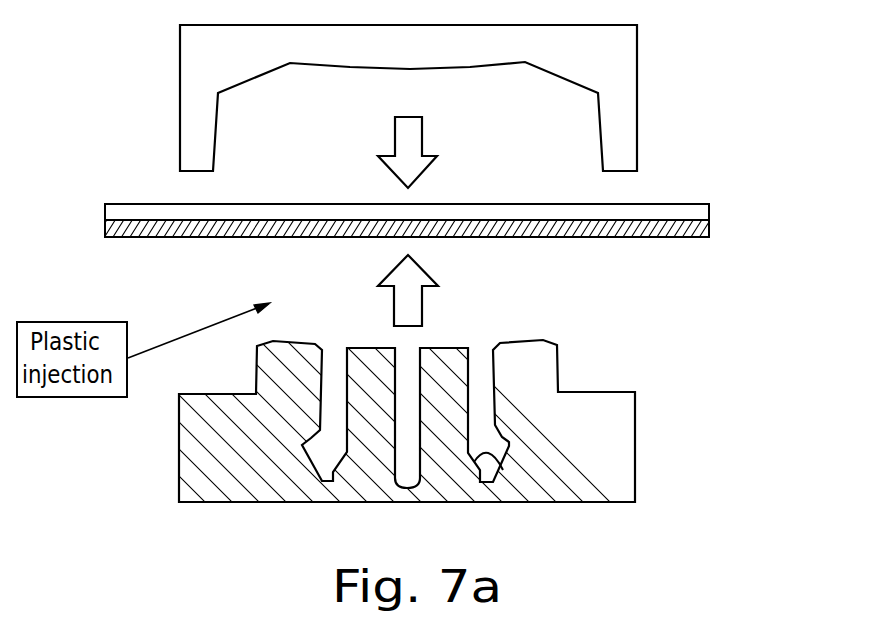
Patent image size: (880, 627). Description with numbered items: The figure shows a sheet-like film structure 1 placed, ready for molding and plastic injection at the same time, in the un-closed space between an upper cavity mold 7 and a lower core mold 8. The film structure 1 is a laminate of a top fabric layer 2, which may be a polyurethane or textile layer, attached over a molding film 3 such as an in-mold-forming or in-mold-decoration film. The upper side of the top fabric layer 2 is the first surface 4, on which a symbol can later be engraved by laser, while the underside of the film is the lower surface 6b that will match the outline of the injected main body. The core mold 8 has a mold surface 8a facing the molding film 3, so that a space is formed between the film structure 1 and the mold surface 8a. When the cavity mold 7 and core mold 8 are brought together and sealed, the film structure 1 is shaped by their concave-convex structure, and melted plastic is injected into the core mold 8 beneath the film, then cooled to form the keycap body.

The film structure 1 is at (429, 229).
The top fabric layer 2 is at (711, 211).
The molding film 3 is at (712, 226).
The first surface 4 is at (633, 204).
The lower surface 6b is at (628, 237).
The cavity mold 7 is at (198, 50).
The core mold 8 is at (333, 441).
The mold surface 8a is at (500, 466).